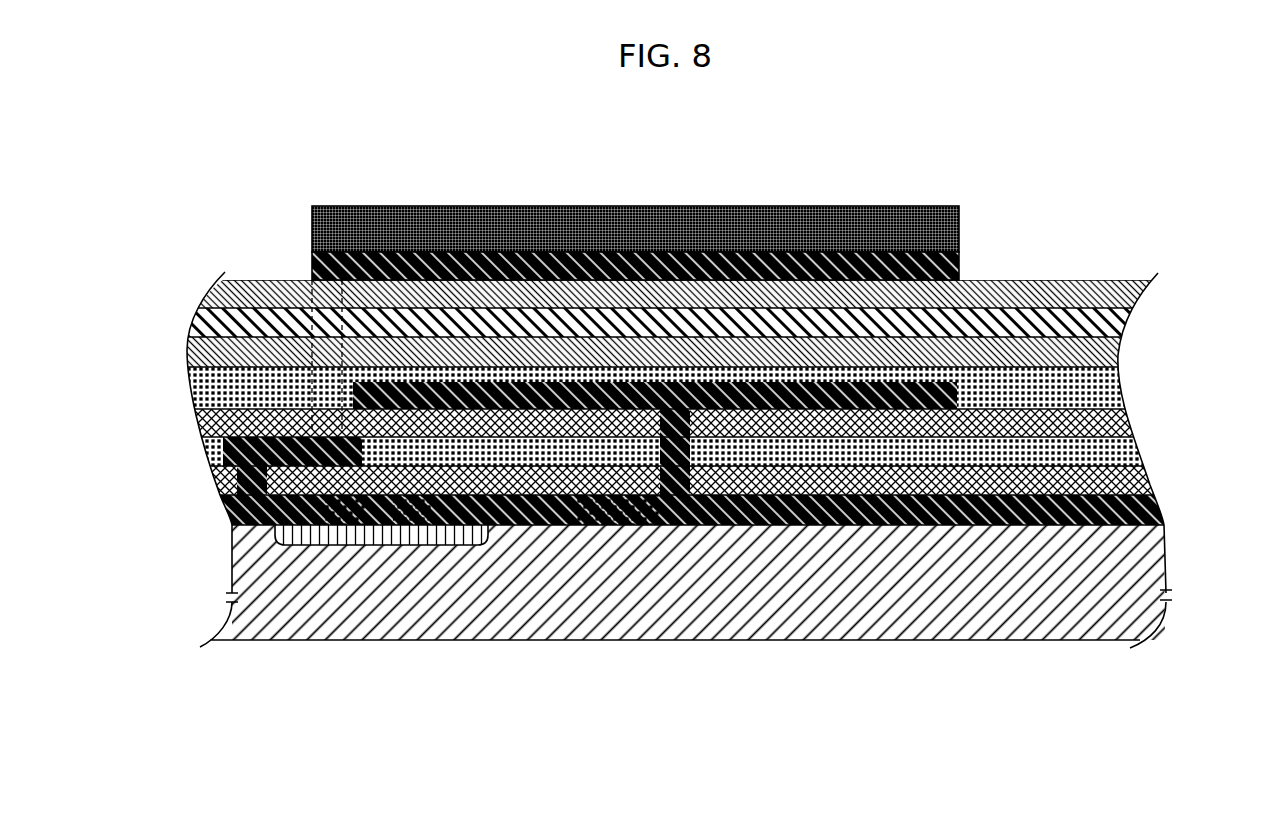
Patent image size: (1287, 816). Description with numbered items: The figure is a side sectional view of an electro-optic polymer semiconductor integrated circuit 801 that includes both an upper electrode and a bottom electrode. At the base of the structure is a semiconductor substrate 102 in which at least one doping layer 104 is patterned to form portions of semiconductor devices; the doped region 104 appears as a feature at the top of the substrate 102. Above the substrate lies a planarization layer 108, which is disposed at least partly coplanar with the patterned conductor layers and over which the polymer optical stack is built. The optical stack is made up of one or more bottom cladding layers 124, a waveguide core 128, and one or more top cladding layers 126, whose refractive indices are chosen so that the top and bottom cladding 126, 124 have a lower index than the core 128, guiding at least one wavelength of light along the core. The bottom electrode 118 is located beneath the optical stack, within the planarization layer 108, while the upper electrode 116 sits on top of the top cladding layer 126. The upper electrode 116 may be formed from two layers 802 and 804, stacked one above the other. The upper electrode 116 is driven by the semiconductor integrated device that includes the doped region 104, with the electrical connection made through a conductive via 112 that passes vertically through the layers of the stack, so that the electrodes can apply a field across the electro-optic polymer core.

The electro-optic polymer semiconductor integrated circuit 801 is at (961, 95).
The semiconductor substrate 102 is at (1183, 388).
The doping layer 104 is at (224, 540).
The planarization layer 108 is at (190, 400).
The conductive via 112 is at (348, 352).
The upper electrode 116 is at (649, 207).
The bottom electrode 118 is at (957, 395).
The bottom cladding layer 124 is at (187, 360).
The top cladding layer 126 is at (197, 301).
The waveguide core 128 is at (188, 323).
The first layer of upper electrode 802 is at (312, 258).
The second layer of upper electrode 804 is at (448, 205).